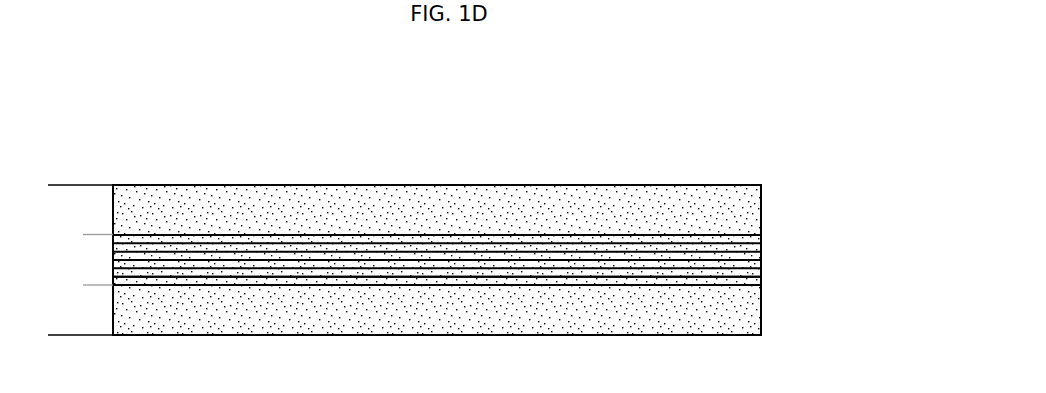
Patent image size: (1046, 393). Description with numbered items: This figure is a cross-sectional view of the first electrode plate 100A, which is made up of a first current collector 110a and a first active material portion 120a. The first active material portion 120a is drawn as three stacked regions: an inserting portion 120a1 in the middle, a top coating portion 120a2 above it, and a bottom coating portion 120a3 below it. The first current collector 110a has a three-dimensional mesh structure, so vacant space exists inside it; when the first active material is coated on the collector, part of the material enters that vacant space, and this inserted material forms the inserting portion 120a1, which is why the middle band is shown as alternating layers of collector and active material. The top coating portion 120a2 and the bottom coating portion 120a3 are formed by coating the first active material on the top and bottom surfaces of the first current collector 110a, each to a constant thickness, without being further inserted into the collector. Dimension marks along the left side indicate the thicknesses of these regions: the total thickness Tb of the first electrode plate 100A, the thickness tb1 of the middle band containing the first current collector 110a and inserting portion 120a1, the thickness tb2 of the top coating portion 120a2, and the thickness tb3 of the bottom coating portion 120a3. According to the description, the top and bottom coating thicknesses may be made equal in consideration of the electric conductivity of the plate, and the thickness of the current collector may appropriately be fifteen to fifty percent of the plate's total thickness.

The first electrode plate 100A is at (78, 132).
The first current collector 110a is at (333, 282).
The first active material portion 120a is at (843, 203).
The inserting portion 120a1 is at (757, 259).
The top coating portion 120a2 is at (757, 211).
The bottom coating portion 120a3 is at (757, 307).
The total thickness Tb is at (52, 186).
The thickness of first layer tb1 is at (100, 236).
The thickness of second layer tb2 is at (100, 186).
The thickness of third layer tb3 is at (100, 286).